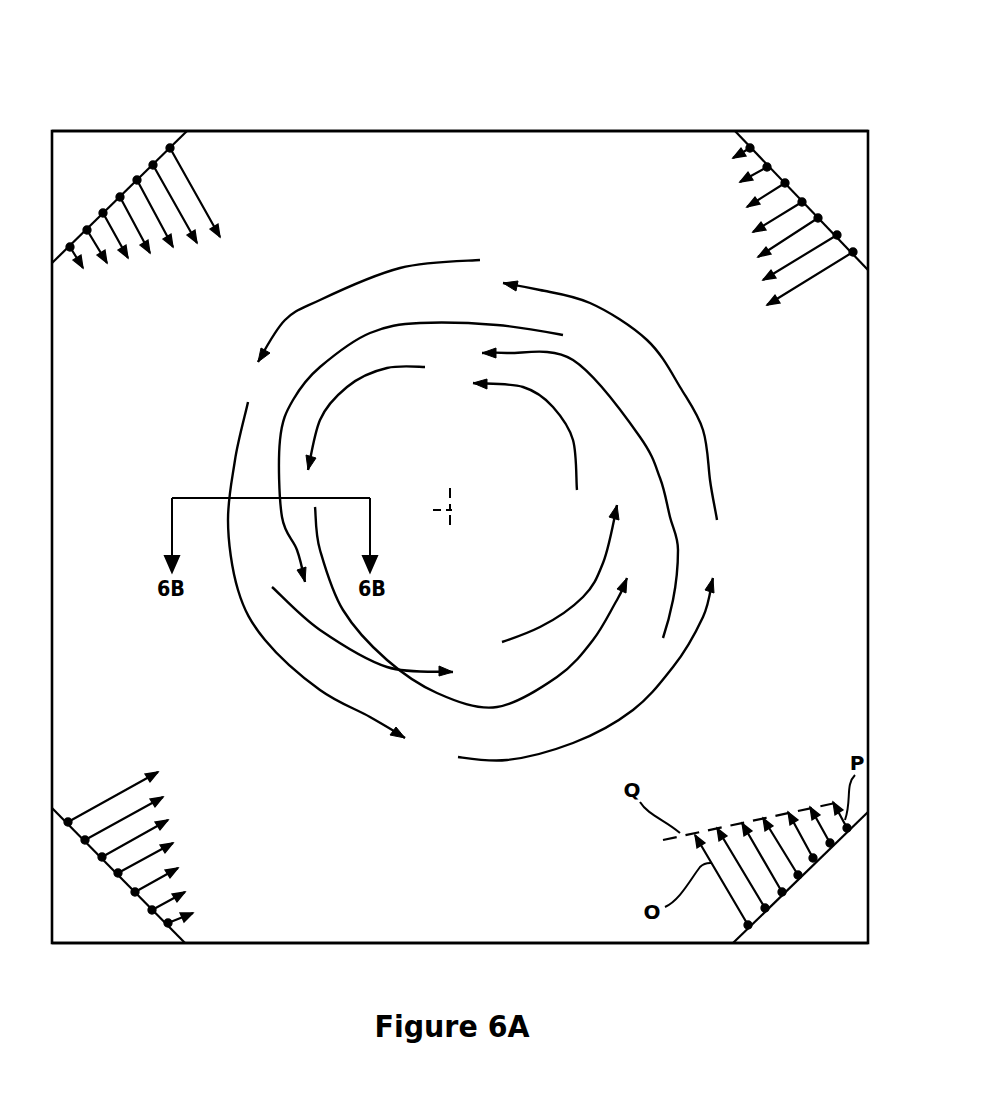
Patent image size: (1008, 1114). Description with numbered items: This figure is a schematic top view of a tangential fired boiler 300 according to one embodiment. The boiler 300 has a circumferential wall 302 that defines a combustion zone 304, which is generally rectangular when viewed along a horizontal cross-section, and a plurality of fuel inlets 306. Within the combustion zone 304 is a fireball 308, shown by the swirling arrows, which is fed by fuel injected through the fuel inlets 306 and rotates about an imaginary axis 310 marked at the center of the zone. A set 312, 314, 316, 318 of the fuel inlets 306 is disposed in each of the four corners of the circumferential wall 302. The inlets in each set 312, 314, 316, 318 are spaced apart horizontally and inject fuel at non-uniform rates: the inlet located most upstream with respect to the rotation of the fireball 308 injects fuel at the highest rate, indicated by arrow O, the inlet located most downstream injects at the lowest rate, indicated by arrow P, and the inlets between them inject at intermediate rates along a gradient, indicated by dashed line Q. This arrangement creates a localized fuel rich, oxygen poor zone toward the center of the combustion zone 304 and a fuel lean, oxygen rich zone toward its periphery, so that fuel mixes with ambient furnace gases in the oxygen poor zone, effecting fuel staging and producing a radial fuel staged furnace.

The tangential fired boiler 300 is at (393, 115).
The circumferential wall 302 is at (626, 131).
The combustion zone 304 is at (437, 851).
The fuel inlets 306 is at (813, 867).
The fireball 308 is at (680, 455).
The imaginary axis 310 is at (458, 505).
The set of fuel inlets 312 is at (110, 172).
The set of fuel inlets 314 is at (820, 177).
The set of fuel inlets 316 is at (103, 900).
The set of fuel inlets 318 is at (840, 867).